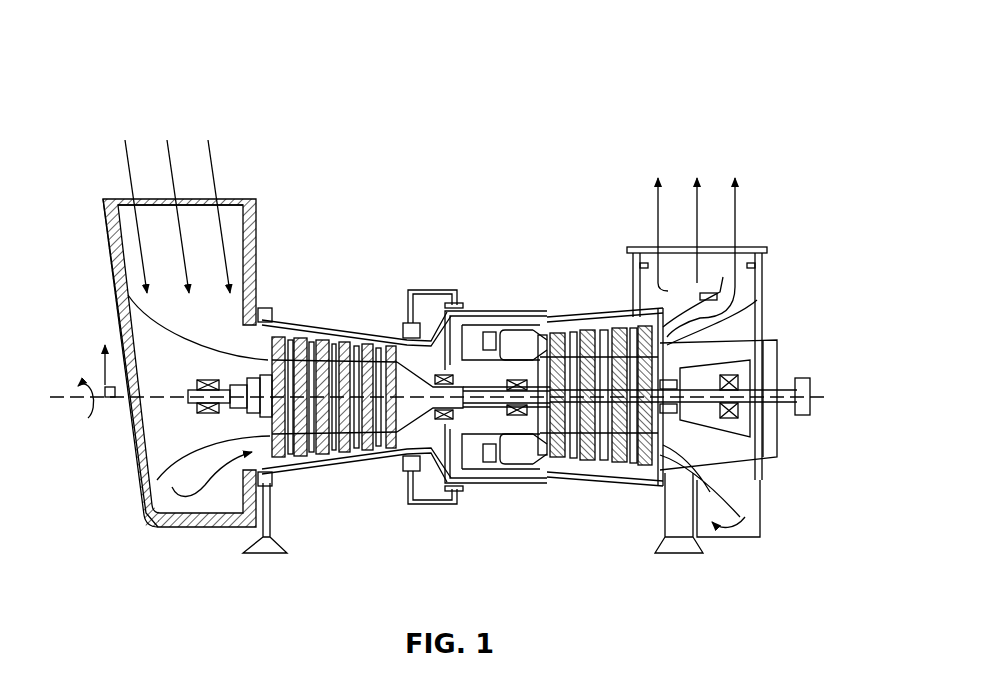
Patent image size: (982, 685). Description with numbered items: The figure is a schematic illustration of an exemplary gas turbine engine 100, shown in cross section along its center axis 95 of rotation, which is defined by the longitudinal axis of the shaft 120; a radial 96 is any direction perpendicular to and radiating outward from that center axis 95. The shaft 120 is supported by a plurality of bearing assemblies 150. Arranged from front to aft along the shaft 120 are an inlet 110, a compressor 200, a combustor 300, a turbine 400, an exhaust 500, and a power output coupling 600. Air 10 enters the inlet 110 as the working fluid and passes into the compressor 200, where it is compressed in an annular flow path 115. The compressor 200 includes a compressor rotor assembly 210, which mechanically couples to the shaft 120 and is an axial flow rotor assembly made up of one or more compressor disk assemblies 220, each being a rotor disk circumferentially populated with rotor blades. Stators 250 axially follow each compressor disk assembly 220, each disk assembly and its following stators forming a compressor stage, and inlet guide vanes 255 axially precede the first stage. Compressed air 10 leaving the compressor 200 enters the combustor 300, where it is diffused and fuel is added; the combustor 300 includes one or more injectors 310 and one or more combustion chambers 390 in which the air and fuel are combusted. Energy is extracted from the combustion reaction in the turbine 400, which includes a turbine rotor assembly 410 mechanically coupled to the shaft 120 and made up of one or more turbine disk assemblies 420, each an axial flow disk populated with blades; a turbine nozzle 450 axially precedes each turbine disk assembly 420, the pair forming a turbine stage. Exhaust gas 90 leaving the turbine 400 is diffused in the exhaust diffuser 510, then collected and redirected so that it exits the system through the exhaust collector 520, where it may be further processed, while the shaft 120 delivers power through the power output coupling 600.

The gas turbine engine 100 is at (133, 30).
The air 10 is at (128, 170).
The inlet 110 is at (251, 120).
The annular flow path 115 is at (237, 332).
The shaft 120 is at (191, 388).
The bearing assemblies 150 is at (207, 413).
The compressor 200 is at (433, 119).
The compressor rotor assembly 210 is at (335, 482).
The compressor disk assemblies 220 is at (292, 470).
The compressor stationary vanes (stators) 250 is at (332, 340).
The inlet guide vanes 255 is at (268, 320).
The combustor 300 is at (532, 119).
The injectors 310 is at (483, 308).
The combustion chamber 390 is at (520, 328).
The turbine 400 is at (655, 119).
The turbine rotor assembly 410 is at (594, 489).
The turbine disk assemblies 420 is at (630, 462).
The turbine nozzles 450 is at (630, 325).
The exhaust 500 is at (785, 142).
The exhaust diffuser 510 is at (680, 325).
The exhaust collector 520 is at (745, 282).
The power output coupling 600 is at (800, 378).
The exhaust gas 90 is at (655, 210).
The center axis 95 is at (82, 410).
The radial 96 is at (102, 367).